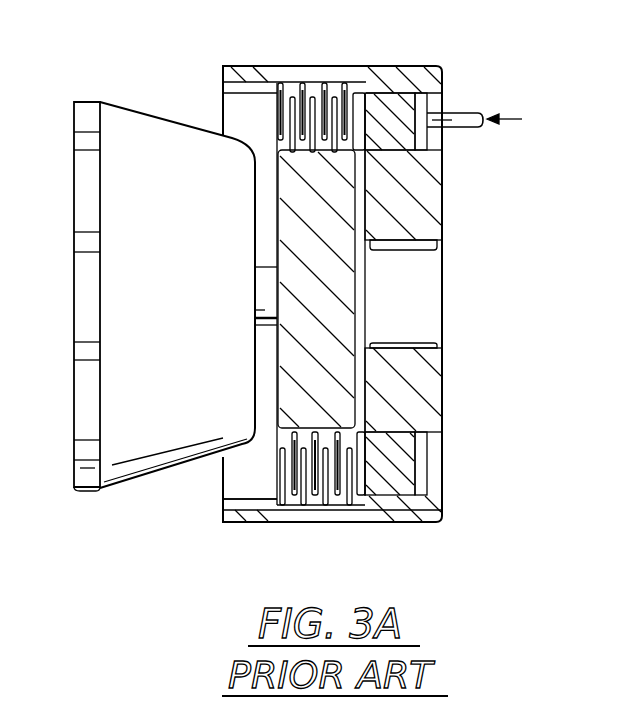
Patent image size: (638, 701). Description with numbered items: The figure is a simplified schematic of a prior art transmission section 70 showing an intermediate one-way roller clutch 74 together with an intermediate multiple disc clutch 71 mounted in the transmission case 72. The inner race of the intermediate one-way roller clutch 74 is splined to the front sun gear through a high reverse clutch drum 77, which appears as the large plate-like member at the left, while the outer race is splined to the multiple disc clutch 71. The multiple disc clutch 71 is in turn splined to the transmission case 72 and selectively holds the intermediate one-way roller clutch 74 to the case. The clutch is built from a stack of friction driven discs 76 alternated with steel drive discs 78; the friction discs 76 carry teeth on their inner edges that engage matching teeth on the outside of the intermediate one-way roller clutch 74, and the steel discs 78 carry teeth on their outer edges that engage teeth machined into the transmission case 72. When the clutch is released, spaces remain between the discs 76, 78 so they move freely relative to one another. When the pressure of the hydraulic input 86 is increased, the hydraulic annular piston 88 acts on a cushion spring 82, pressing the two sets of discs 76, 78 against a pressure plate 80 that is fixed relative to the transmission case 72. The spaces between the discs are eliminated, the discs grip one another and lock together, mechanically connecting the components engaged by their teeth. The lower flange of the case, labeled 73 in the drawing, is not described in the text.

The section 70 is at (512, 158).
The intermediate multiple disc clutch 71 is at (458, 218).
The transmission case 72 is at (252, 35).
The bottom flange 73 is at (298, 508).
The intermediate one-way roller clutch 74 is at (343, 303).
The friction driven discs 76 is at (336, 95).
The high reverse clutch drum 77 is at (160, 72).
The steel drive discs 78 is at (348, 508).
The pressure plate 80 is at (275, 478).
The cushion spring 82 is at (360, 507).
The hydraulic input 86 is at (465, 112).
The hydraulic annular piston 88 is at (387, 102).